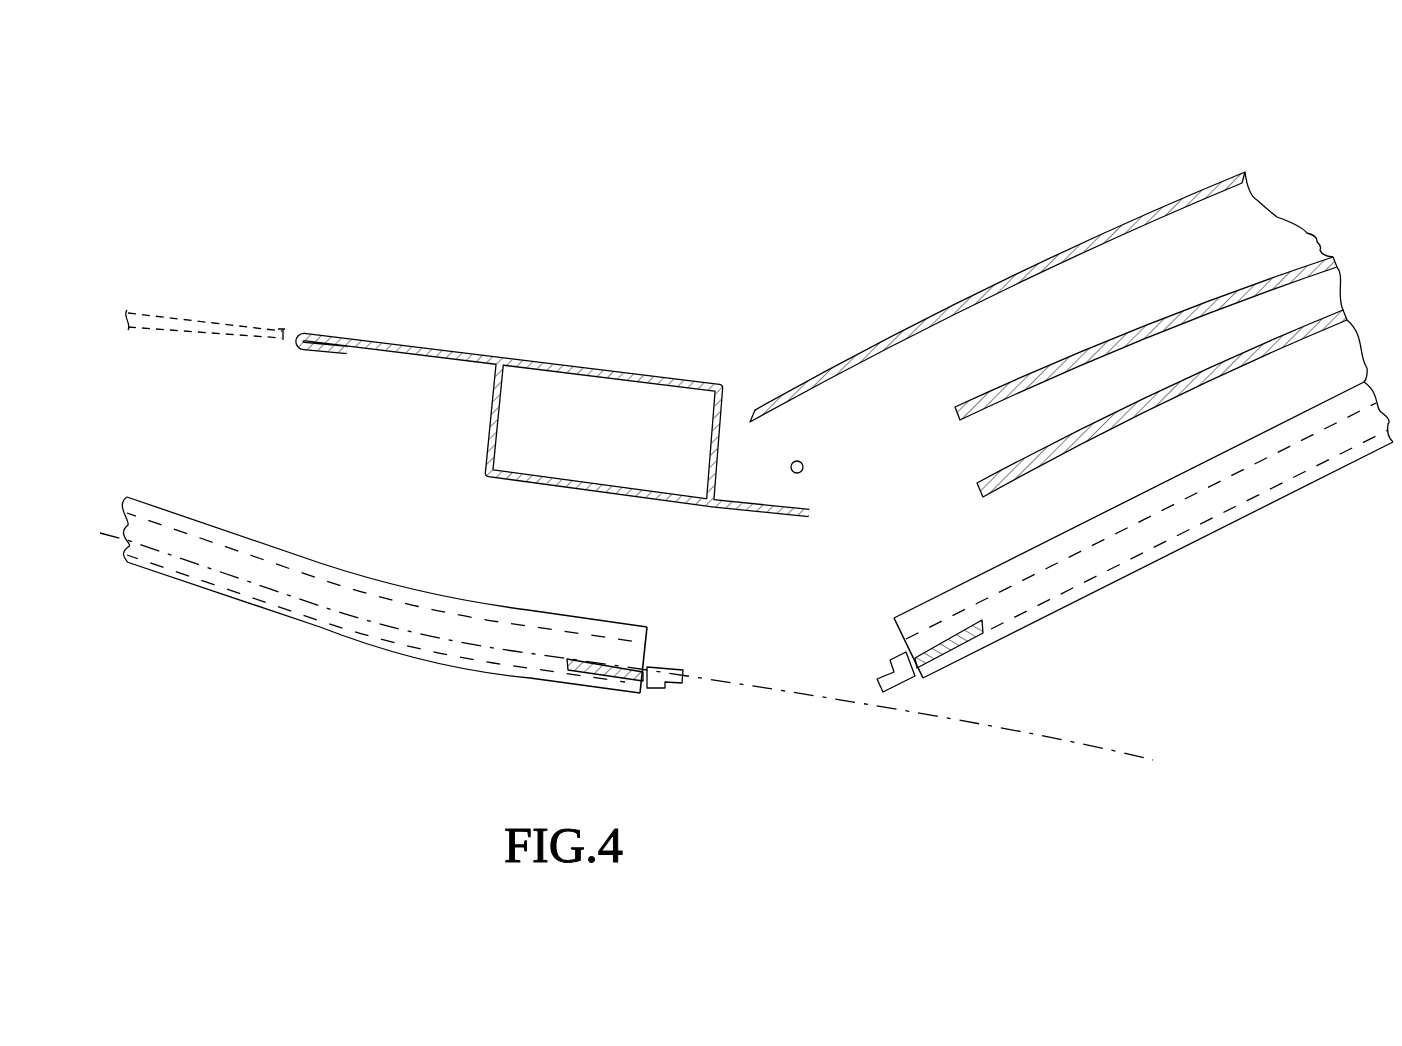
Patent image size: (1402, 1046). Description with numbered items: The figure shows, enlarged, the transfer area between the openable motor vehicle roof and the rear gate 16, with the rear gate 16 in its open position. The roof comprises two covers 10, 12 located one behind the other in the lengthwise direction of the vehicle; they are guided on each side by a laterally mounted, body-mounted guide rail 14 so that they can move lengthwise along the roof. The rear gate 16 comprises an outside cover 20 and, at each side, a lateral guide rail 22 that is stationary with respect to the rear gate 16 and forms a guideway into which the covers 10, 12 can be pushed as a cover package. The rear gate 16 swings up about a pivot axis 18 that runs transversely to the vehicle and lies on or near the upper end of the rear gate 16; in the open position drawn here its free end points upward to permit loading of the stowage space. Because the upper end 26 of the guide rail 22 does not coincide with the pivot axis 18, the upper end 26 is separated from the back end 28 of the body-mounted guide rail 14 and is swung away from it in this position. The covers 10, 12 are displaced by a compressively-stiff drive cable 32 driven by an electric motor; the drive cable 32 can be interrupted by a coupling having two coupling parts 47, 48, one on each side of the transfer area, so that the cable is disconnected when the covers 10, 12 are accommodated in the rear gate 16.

The cover 10 is at (1133, 418).
The cover 12 is at (1042, 368).
The guide rail 14 is at (493, 637).
The rear gate 16 is at (1087, 227).
The pivot axis 18 is at (797, 461).
The outside cover 20 is at (892, 338).
The guide rail 22 is at (1047, 582).
The upper end 26 is at (892, 632).
The back end 28 is at (650, 635).
The drive cable 32 is at (590, 673).
The coupling part 47 is at (658, 683).
The coupling part 48 is at (897, 678).